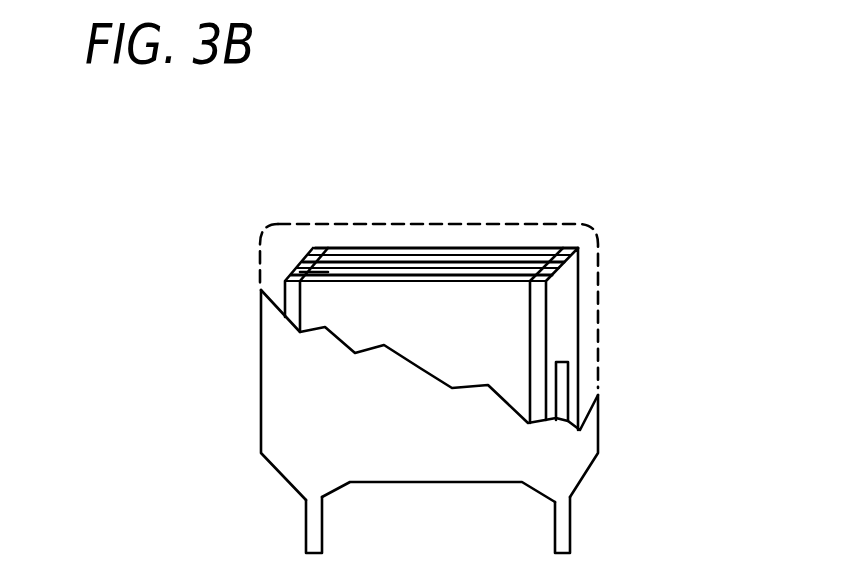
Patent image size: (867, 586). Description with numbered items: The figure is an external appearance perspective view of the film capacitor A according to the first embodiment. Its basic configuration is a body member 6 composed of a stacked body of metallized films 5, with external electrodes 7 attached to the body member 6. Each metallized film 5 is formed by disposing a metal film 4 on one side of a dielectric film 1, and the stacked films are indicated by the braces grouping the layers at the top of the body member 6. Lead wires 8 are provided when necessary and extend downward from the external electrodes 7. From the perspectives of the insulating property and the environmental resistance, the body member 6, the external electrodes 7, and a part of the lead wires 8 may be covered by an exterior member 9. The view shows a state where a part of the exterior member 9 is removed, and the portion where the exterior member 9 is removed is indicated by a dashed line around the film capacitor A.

The dielectric film 1 is at (398, 267).
The metal film 4 is at (367, 272).
The metallized film 5 is at (431, 185).
The body member 6 is at (431, 156).
The external electrode 7 is at (290, 276).
The lead wire 8 is at (307, 532).
The exterior member 9 is at (260, 402).
The film capacitor A is at (636, 180).